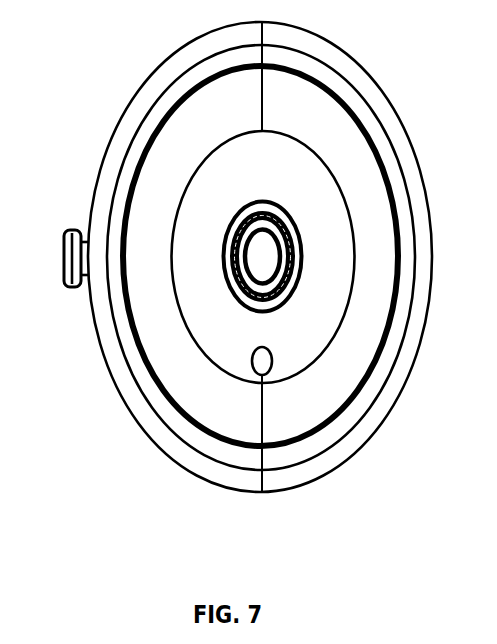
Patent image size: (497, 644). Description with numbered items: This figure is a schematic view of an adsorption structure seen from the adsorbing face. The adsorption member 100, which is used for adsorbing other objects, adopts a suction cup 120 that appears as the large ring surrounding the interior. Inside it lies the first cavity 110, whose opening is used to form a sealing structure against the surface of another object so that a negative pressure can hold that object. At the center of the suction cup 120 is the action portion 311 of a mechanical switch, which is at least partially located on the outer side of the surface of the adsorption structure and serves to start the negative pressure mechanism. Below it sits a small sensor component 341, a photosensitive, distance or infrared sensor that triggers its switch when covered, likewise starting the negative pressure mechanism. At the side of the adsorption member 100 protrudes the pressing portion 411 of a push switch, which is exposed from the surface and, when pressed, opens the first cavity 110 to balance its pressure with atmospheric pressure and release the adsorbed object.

The adsorption member 100 is at (430, 495).
The first cavity 110 is at (372, 280).
The suction cup 120 is at (407, 263).
The action portion 311 is at (265, 257).
The sensor component 341 is at (256, 377).
The pressing portion 411 is at (64, 265).